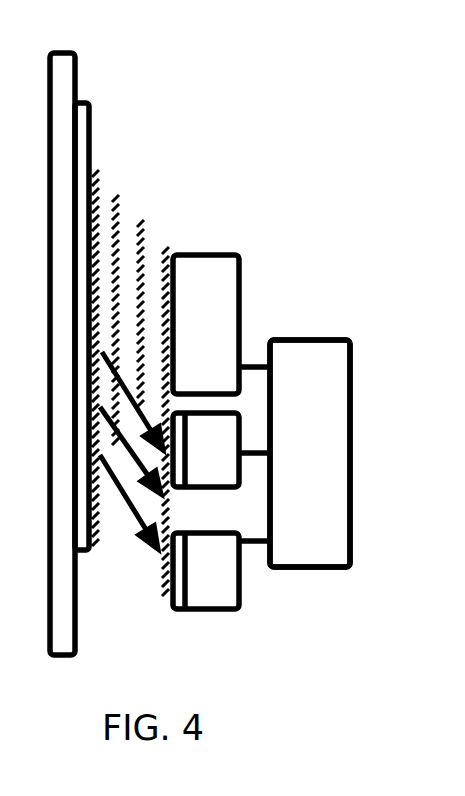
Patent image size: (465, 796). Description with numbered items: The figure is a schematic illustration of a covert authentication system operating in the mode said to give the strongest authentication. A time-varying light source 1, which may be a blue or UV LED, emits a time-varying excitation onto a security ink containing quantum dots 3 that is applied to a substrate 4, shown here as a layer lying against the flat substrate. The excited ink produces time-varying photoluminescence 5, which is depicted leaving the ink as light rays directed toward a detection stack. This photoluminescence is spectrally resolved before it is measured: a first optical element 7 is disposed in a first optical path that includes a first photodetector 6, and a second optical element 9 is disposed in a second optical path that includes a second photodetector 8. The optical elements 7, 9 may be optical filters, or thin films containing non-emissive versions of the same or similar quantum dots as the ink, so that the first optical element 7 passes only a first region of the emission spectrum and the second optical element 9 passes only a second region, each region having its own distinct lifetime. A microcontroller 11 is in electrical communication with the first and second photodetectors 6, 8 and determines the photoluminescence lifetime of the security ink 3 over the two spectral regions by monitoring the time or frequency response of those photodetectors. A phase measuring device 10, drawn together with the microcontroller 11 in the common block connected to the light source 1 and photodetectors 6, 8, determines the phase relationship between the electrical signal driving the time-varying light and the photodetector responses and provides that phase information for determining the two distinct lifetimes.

The light source 1 is at (221, 324).
The security ink containing QDs 3 is at (100, 321).
The substrate 4 is at (62, 328).
The time-varying photoluminescence from the ink 5 is at (129, 512).
The first photodetector 6 is at (221, 450).
The first optical element 7 is at (144, 467).
The second photodetector 8 is at (221, 571).
The second optical element 9 is at (177, 592).
The phase measuring device 10 is at (310, 453).
The microcontroller 11 is at (310, 453).